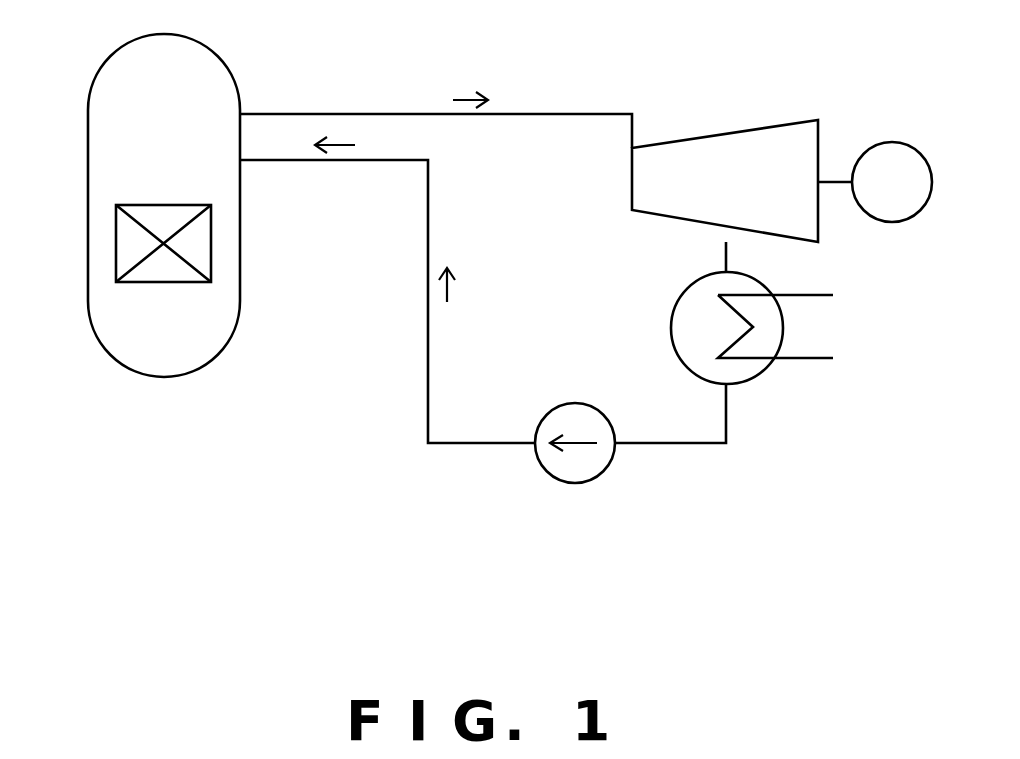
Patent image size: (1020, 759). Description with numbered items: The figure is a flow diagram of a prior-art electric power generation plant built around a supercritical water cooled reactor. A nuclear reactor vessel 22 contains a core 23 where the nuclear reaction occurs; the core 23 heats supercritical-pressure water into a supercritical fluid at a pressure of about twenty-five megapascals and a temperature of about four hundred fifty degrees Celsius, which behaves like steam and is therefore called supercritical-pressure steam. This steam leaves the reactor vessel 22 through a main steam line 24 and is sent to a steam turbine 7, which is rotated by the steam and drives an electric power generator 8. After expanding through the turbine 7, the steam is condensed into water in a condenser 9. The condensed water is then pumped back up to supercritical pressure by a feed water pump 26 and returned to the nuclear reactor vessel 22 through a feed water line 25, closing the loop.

The steam turbine 7 is at (726, 148).
The electric power generator 8 is at (890, 143).
The condenser 9 is at (760, 376).
The nuclear reactor vessel 22 is at (88, 172).
The core 23 is at (165, 218).
The main steam line 24 is at (388, 113).
The feed water line 25 is at (428, 210).
The feed water pump 26 is at (573, 483).